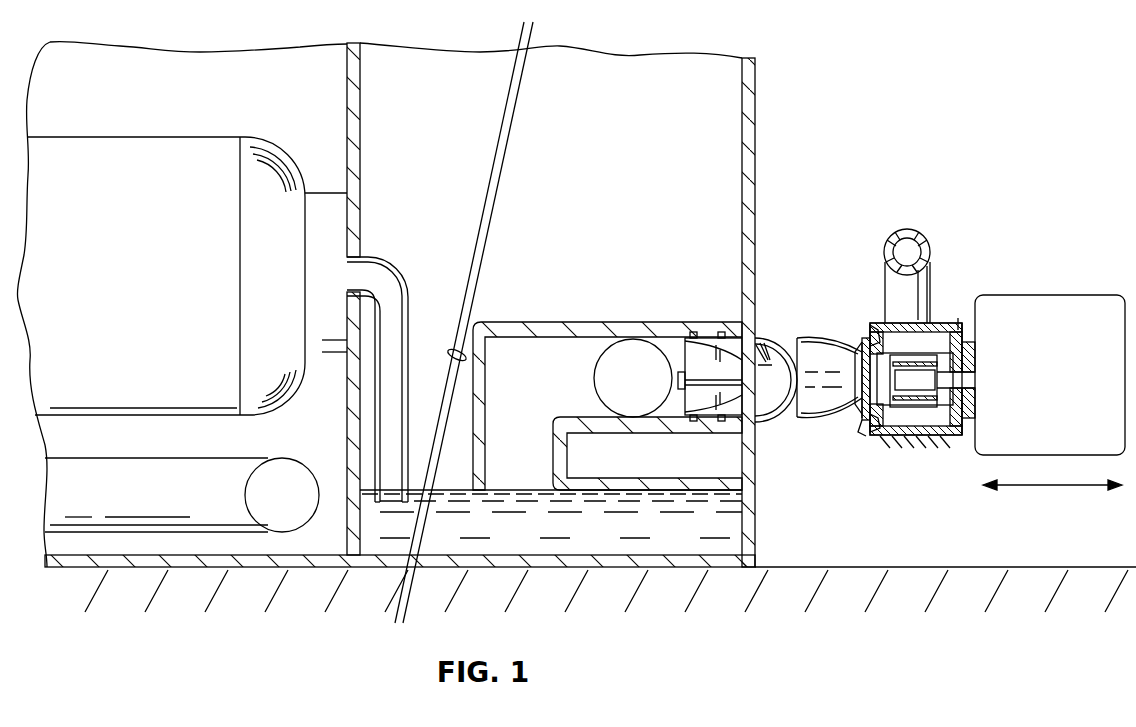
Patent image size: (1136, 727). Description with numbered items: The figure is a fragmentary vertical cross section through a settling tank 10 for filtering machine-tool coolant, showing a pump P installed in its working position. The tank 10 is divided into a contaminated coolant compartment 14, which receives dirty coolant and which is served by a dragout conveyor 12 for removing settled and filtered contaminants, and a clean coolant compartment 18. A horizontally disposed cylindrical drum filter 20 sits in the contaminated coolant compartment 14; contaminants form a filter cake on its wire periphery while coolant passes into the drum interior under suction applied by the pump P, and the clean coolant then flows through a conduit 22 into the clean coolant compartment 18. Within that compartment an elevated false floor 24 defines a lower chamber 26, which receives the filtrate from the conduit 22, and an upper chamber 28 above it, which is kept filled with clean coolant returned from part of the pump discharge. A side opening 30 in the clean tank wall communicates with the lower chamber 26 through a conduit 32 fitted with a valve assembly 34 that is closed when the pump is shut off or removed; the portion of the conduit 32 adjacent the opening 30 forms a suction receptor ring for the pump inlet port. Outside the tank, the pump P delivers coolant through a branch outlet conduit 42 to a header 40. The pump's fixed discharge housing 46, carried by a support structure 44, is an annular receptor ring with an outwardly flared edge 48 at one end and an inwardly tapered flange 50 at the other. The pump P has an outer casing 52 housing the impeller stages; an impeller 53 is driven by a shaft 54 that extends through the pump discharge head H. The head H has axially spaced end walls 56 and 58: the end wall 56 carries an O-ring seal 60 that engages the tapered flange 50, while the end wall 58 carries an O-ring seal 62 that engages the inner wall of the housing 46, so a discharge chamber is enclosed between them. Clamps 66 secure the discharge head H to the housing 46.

The settling tank 10 is at (840, 113).
The dragout conveyor 12 is at (290, 446).
The contaminated coolant compartment 14 is at (182, 58).
The clean coolant compartment 18 is at (610, 194).
The drum filter 20 is at (123, 146).
The conduit 22 is at (393, 262).
The false floor 24 is at (667, 481).
The lower chamber 26 is at (593, 540).
The upper chamber 28 is at (720, 212).
The side opening 30 is at (750, 437).
The conduit 32 is at (543, 326).
The valve assembly 34 is at (594, 380).
The header 40 is at (888, 240).
The branch outlet conduit 42 is at (885, 291).
The support structure 44 is at (900, 440).
The discharge housing 46 is at (938, 330).
The flared edge 48 is at (970, 446).
The tapered flange 50 is at (868, 340).
The outer casing 52 is at (812, 424).
The impeller 53 is at (772, 340).
The shaft 54 is at (918, 382).
The end wall 56 is at (855, 345).
The end wall 58 is at (966, 323).
The O-ring seal 60 is at (873, 327).
The O-ring seal 62 is at (962, 322).
The clamps 66 is at (862, 442).
The pump discharge head H is at (941, 447).
The pump P is at (828, 478).